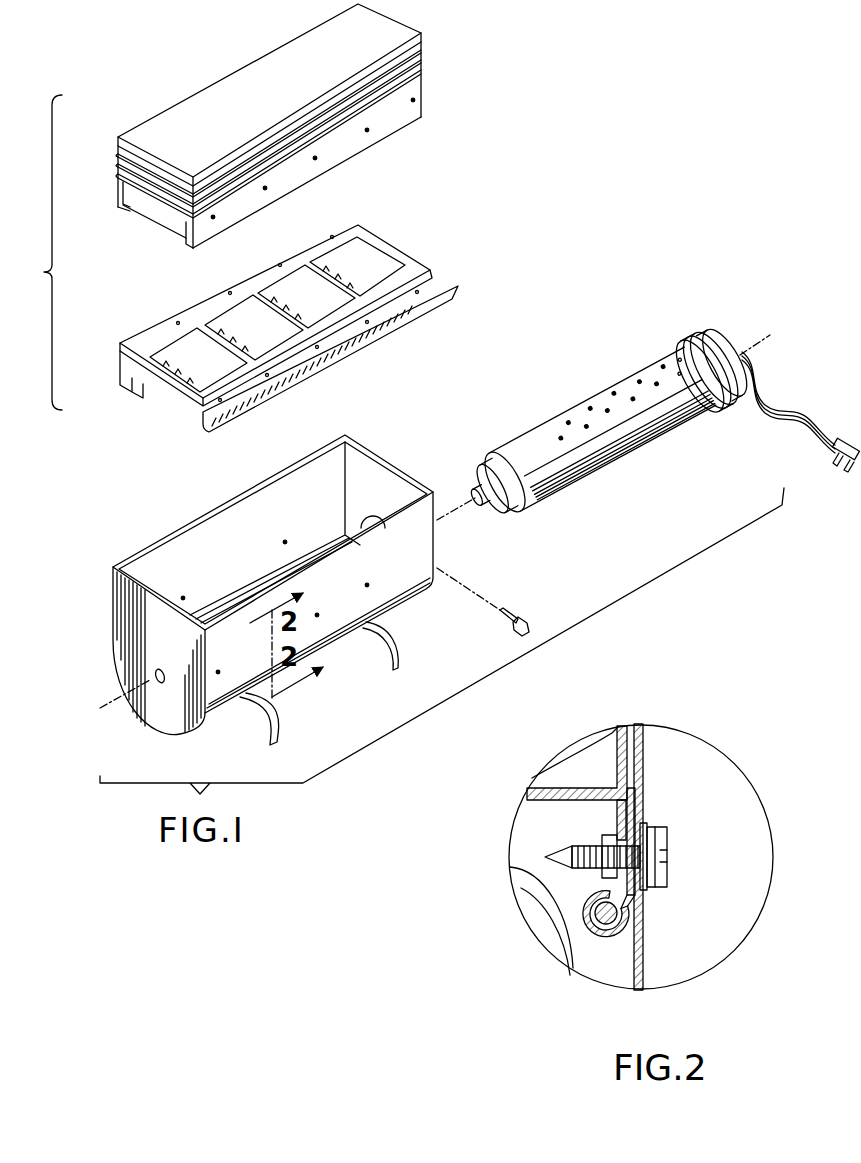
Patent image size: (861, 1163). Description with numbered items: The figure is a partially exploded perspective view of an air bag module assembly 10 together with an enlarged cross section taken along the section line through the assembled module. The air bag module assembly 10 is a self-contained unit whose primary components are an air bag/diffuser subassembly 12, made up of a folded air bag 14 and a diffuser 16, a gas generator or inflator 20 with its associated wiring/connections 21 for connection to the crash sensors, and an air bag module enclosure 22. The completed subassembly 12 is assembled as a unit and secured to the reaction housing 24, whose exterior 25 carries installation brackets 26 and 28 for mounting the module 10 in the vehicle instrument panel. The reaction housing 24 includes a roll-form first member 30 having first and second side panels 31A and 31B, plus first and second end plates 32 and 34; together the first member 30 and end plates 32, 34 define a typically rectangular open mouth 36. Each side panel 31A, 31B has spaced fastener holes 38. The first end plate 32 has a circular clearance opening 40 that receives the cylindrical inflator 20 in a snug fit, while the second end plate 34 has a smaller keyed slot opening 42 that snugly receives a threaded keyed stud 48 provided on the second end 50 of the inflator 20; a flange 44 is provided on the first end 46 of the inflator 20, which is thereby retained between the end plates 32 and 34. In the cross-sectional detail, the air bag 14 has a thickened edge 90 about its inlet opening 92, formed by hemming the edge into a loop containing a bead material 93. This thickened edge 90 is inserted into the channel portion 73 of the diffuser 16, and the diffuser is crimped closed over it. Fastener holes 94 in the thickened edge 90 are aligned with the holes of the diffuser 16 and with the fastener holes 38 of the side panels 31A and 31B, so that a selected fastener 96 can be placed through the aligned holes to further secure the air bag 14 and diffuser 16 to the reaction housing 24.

In FIG. 1, the air bag module assembly 10 is at (614, 183).
In FIG. 1, the air bag/diffuser subassembly 12 is at (36, 252).
In FIG. 1, the folded air bag 14 is at (270, 67).
In FIG. 2, the folded air bag 14 is at (593, 755).
In FIG. 1, the diffuser 16 is at (413, 260).
In FIG. 2, the diffuser 16 is at (631, 790).
In FIG. 1, the inflator 20 is at (613, 440).
In FIG. 2, the inflator 20 is at (542, 923).
In FIG. 1, the wiring/connections 21 is at (843, 425).
In FIG. 1, the air bag module enclosure 22 is at (77, 522).
In FIG. 1, the reaction housing 24 is at (135, 667).
In FIG. 2, the reaction housing 24 is at (643, 748).
In FIG. 1, the exterior 25 is at (393, 575).
In FIG. 1, the installation bracket 26 is at (247, 725).
In FIG. 1, the installation bracket 28 is at (387, 673).
In FIG. 1, the first member 30 is at (317, 615).
In FIG. 1, the first side panel 31A is at (140, 568).
In FIG. 1, the second side panel 31B is at (430, 575).
In FIG. 1, the first end plate 32 is at (407, 488).
In FIG. 1, the second end plate 34 is at (127, 632).
In FIG. 1, the open mouth 36 is at (363, 473).
In FIG. 1, the fastener holes 38 is at (285, 542).
In FIG. 1, the clearance opening 40 is at (382, 517).
In FIG. 1, the keyed slot opening 42 is at (162, 685).
In FIG. 1, the flange 44 is at (692, 332).
In FIG. 1, the first end 46 is at (730, 340).
In FIG. 1, the threaded keyed stud 48 is at (483, 500).
In FIG. 1, the second end 50 is at (457, 447).
In FIG. 2, the channel portion 73 is at (606, 936).
In FIG. 1, the thickened edge 90 is at (425, 111).
In FIG. 2, the thickened edge 90 is at (620, 815).
In FIG. 1, the inlet opening 92 is at (160, 212).
In FIG. 2, the bead material 93 is at (620, 912).
In FIG. 1, the fastener holes 94 is at (367, 130).
In FIG. 1, the fastener 96 is at (523, 622).
In FIG. 2, the fastener 96 is at (660, 843).